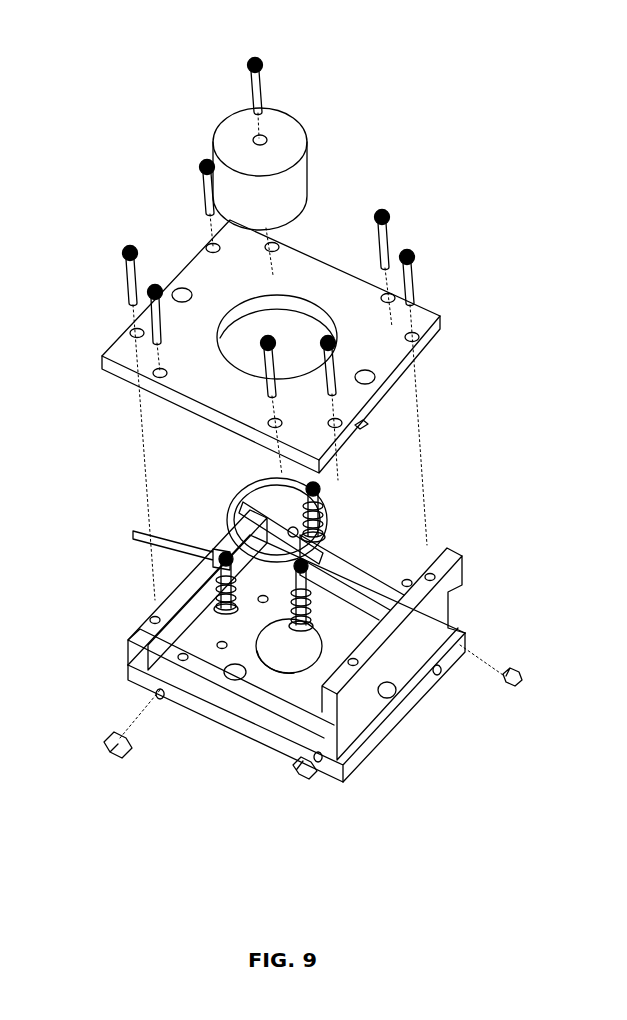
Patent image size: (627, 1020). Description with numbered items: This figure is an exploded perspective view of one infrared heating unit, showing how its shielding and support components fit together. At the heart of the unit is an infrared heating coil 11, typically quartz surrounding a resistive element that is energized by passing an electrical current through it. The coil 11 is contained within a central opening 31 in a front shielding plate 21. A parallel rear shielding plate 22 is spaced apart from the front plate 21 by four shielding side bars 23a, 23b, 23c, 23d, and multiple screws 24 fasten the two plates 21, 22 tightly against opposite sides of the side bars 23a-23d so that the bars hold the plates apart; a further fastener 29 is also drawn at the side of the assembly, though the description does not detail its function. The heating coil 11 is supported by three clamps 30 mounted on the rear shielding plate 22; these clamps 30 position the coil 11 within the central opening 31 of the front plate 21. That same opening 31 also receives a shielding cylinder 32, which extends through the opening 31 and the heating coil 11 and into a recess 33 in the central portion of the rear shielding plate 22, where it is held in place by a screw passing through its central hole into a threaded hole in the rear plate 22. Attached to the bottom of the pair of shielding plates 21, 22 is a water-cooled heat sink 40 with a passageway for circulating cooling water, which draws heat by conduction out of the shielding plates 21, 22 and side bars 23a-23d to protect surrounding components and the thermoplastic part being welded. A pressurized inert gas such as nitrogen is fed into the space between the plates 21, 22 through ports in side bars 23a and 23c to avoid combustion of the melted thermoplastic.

The infrared heating coil 11 is at (343, 507).
The front shielding plate 21 is at (438, 312).
The rear shielding plate 22 is at (375, 745).
The shielding side bar 23a is at (150, 610).
The shielding side bar 23b is at (373, 553).
The shielding side bar 23c is at (462, 560).
The shielding side bar 23d is at (190, 686).
The screws 24 is at (263, 77).
The screw 29 is at (521, 672).
The clamps 30 is at (332, 483).
The central opening 31 is at (222, 355).
The shielding cylinder 32 is at (305, 126).
The recess 33 is at (283, 672).
The water-cooled heat sink 40 is at (153, 693).